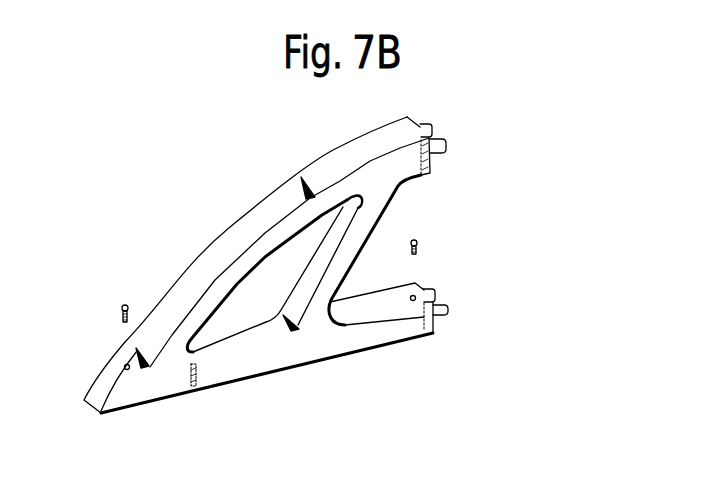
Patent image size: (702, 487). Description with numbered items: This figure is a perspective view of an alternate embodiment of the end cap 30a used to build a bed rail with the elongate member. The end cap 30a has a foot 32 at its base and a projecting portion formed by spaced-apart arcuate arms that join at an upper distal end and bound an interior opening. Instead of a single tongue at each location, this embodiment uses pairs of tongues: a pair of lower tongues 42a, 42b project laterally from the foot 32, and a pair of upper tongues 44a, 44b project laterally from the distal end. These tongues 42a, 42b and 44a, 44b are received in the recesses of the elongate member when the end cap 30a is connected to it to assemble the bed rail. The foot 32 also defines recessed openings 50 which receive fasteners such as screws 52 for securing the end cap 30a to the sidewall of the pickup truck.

The end cap 30a is at (236, 226).
The foot 32 is at (171, 383).
The lower tongue 42a is at (449, 310).
The lower tongue 42b is at (435, 292).
The upper tongue 44a is at (446, 151).
The upper tongue 44b is at (427, 124).
The recessed openings 50 is at (126, 364).
The screws 52 is at (124, 303).